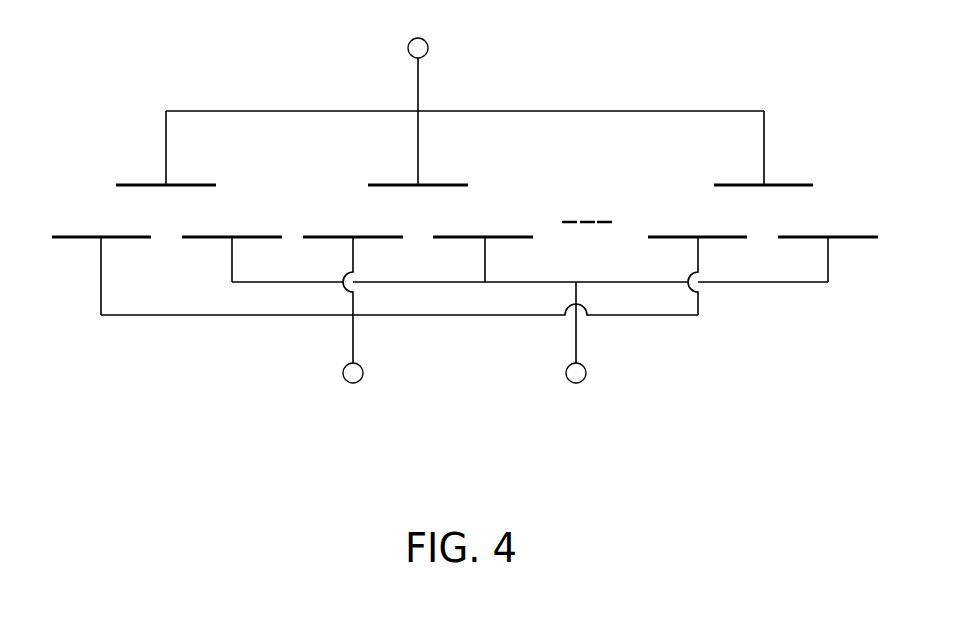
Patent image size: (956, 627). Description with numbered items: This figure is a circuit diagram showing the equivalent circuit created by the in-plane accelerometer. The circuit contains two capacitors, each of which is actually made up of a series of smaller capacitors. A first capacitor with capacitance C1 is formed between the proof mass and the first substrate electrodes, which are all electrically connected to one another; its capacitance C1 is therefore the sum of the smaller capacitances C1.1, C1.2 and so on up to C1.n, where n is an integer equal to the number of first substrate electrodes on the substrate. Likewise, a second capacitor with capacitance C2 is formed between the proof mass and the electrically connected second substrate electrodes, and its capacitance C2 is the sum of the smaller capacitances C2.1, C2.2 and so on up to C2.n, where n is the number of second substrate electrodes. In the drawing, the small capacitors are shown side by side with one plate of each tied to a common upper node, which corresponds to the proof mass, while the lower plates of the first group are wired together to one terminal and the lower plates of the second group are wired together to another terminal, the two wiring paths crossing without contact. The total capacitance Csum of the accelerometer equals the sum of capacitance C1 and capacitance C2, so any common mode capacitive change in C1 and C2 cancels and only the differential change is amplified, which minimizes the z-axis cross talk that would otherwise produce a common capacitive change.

The total capacitance Csum is at (464, 94).
The first smaller capacitor capacitance C1.1 is at (101, 257).
The first smaller capacitor capacitance of second group C2.1 is at (232, 241).
The second smaller capacitor capacitance C1.2 is at (353, 281).
The second smaller capacitor capacitance of second group C2.2 is at (483, 241).
The nth smaller capacitor capacitance C1.n is at (697, 257).
The nth smaller capacitor capacitance of second group C2.n is at (828, 241).
The first capacitor capacitance C1 is at (275, 455).
The second capacitor capacitance C2 is at (575, 455).